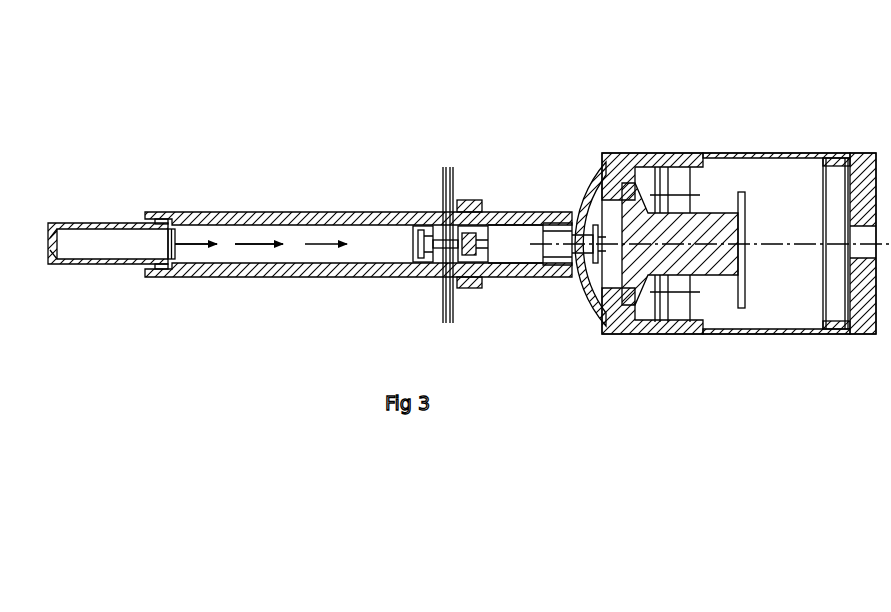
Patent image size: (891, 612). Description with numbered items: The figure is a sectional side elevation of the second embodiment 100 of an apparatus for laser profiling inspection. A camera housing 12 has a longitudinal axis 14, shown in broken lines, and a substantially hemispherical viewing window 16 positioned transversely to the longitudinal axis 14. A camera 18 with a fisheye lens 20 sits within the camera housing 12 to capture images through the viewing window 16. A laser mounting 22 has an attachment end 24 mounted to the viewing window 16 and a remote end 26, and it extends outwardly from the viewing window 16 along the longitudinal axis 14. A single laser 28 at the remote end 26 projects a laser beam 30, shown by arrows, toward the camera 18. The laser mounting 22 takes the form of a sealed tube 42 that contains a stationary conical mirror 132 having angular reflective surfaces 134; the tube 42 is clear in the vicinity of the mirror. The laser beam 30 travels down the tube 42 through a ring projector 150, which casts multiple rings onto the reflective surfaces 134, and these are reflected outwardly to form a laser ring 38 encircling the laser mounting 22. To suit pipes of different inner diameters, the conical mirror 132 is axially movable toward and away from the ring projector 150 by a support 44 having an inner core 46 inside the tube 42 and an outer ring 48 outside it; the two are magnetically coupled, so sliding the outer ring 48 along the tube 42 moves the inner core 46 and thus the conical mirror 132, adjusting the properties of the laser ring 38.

The second embodiment 100 is at (466, 116).
The camera housing 12 is at (750, 152).
The longitudinal axis 14 is at (783, 247).
The viewing window 16 is at (582, 284).
The camera 18 is at (680, 262).
The fisheye lens 20 is at (590, 224).
The laser mounting 22 is at (233, 212).
The attachment end 24 is at (549, 212).
The remote end 26 is at (164, 271).
The laser 28 is at (88, 223).
The laser beam 30 is at (184, 243).
The laser ring 38 is at (443, 172).
The tube 42 is at (253, 272).
The support 44 is at (468, 198).
The inner core 46 is at (513, 213).
The outer ring 48 is at (460, 290).
The conical mirror 132 is at (472, 248).
The reflective surfaces 134 is at (438, 262).
The ring projector 150 is at (420, 237).